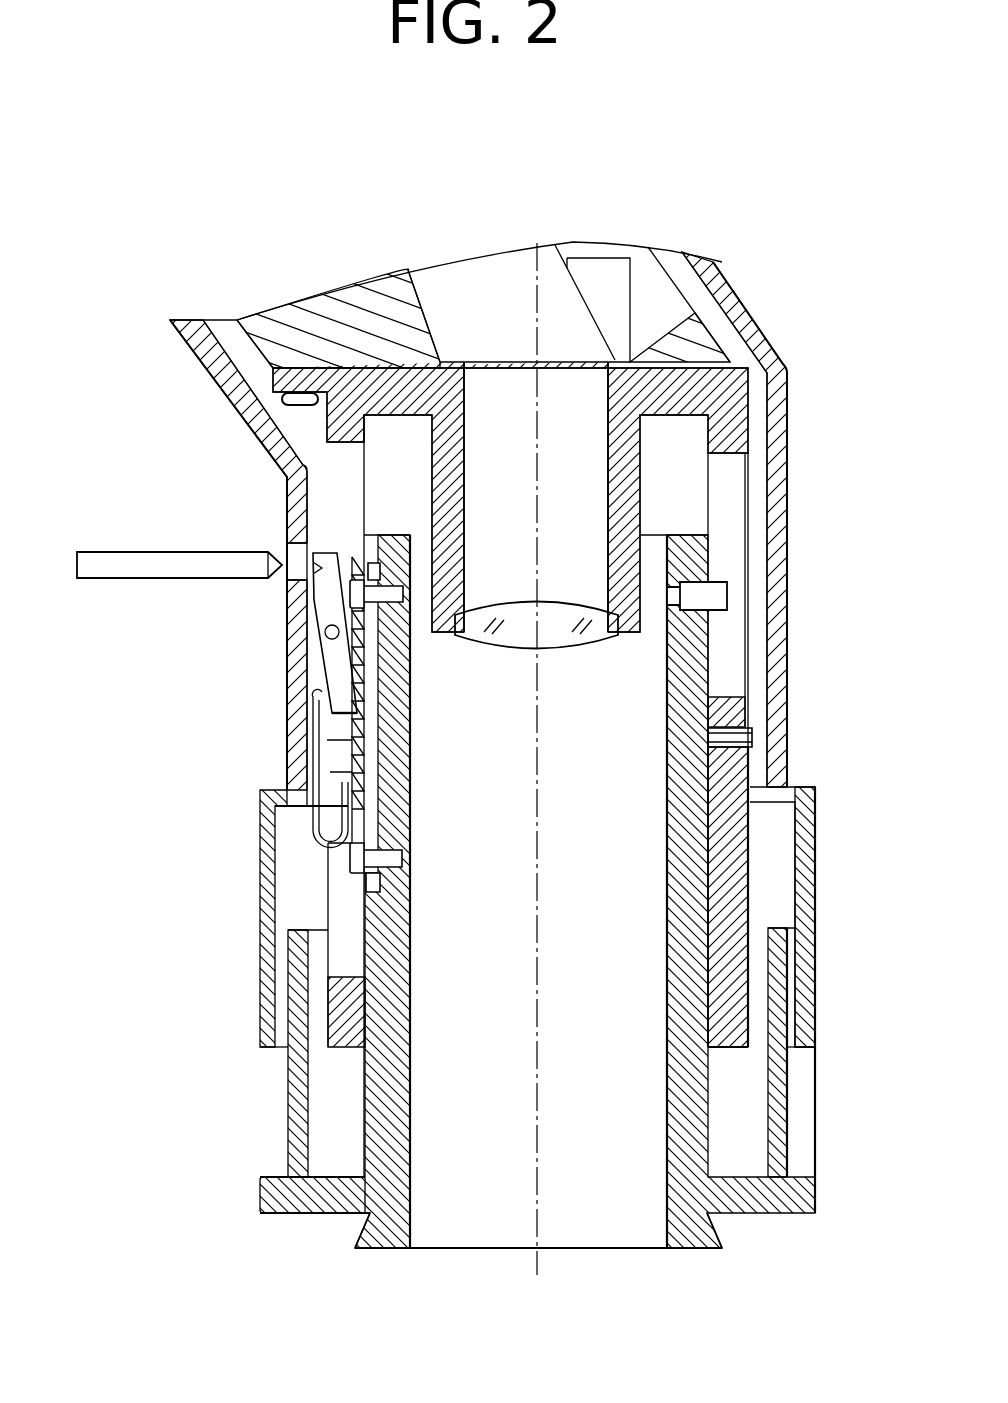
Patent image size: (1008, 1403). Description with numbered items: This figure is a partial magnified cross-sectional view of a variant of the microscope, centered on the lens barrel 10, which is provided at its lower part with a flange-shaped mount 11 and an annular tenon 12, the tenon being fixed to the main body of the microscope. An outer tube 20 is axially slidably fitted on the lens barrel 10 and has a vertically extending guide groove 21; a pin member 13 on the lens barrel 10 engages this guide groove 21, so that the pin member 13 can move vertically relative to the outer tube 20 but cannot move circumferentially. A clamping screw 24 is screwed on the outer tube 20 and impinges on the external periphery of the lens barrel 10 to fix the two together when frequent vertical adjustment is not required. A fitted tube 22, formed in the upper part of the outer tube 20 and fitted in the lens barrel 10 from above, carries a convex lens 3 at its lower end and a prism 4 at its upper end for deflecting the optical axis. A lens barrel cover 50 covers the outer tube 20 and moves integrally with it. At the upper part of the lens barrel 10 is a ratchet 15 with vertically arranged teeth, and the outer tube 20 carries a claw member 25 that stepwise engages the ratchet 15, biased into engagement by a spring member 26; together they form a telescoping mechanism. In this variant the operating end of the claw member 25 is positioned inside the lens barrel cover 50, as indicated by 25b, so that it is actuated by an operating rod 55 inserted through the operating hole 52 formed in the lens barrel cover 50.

The convex lens 3 is at (588, 637).
The prism 4 is at (497, 262).
The lens barrel 10 is at (402, 1065).
The flange-shaped mount 11 is at (282, 1207).
The annular tenon 12 is at (383, 1237).
The pin member 13 is at (727, 596).
The ratchet 15 is at (318, 717).
The outer tube 20 is at (727, 1040).
The guide groove 21 is at (735, 663).
The fitted tube 22 is at (466, 520).
The clamping screw 24 is at (752, 737).
The claw member 25 is at (323, 660).
The operating end positioned inside the lens barrel cover 25b is at (318, 575).
The spring member 26 is at (318, 755).
The lens barrel cover 50 is at (748, 312).
The operating hole 52 is at (283, 548).
The operating rod 55 is at (125, 562).